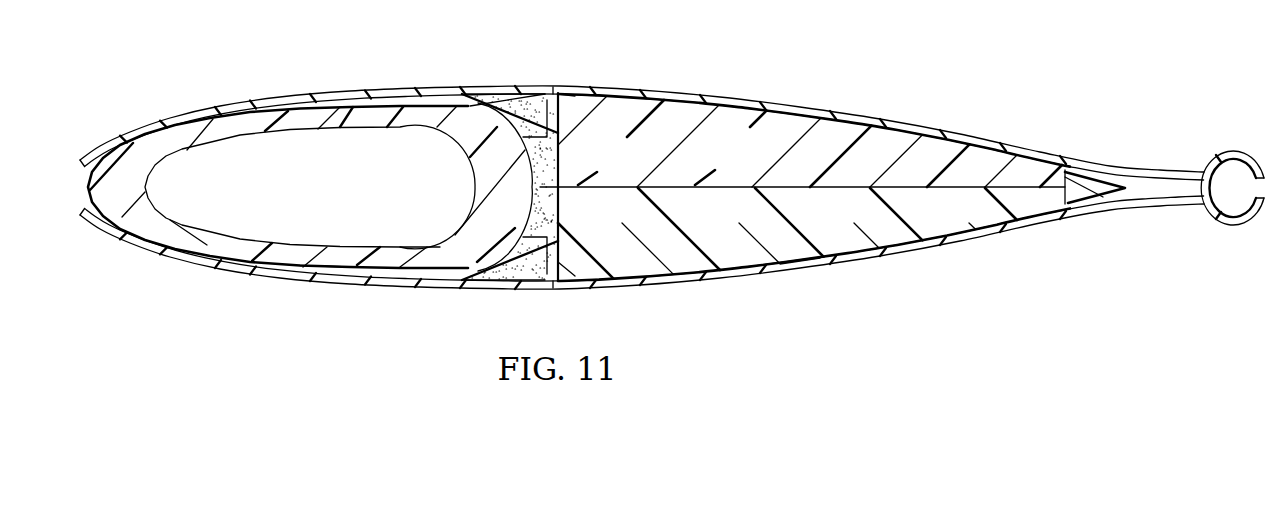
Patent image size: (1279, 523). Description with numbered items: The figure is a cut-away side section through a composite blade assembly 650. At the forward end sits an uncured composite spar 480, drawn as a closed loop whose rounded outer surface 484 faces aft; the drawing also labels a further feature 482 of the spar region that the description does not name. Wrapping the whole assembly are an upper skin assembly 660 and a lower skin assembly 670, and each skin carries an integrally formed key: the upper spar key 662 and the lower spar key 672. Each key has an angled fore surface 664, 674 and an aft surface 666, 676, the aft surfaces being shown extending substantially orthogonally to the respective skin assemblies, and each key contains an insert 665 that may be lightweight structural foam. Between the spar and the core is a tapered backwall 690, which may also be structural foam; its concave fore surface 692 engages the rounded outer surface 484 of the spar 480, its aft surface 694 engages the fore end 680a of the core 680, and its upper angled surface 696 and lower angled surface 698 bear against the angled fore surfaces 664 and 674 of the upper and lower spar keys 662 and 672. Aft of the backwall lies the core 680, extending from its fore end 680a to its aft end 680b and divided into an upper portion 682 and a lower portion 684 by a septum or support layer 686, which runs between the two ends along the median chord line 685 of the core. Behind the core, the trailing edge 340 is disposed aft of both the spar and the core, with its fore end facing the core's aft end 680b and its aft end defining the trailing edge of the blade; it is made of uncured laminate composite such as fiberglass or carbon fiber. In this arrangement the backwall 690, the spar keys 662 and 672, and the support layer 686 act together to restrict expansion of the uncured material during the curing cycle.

The trailing edge 340 is at (1085, 180).
The uncured composite spar 480 is at (356, 120).
The inner cavity lower wall 482 is at (358, 264).
The rounded outer surface 484 is at (323, 107).
The composite blade assembly 650 is at (710, 73).
The upper skin assembly 660 is at (801, 106).
The upper spar key 662 is at (537, 108).
The angled fore surface 664 is at (481, 108).
The insert 665 is at (553, 90).
The aft surface 666 is at (560, 107).
The lower skin assembly 670 is at (795, 274).
The lower spar key 672 is at (533, 273).
The angled fore surface 674 is at (427, 246).
The aft surface 676 is at (560, 262).
The core 680 is at (811, 184).
The fore end 680a is at (527, 183).
The aft end 680b is at (1078, 203).
The upper portion 682 is at (714, 158).
The lower portion 684 is at (714, 243).
The median chord line 685 is at (1025, 183).
The septum or support layer 686 is at (963, 190).
The tapered backwall 690 is at (552, 165).
The concave fore surface 692 is at (500, 155).
The aft surface 694 is at (562, 190).
The upper angled surface 696 is at (500, 100).
The lower angled surface 698 is at (502, 287).